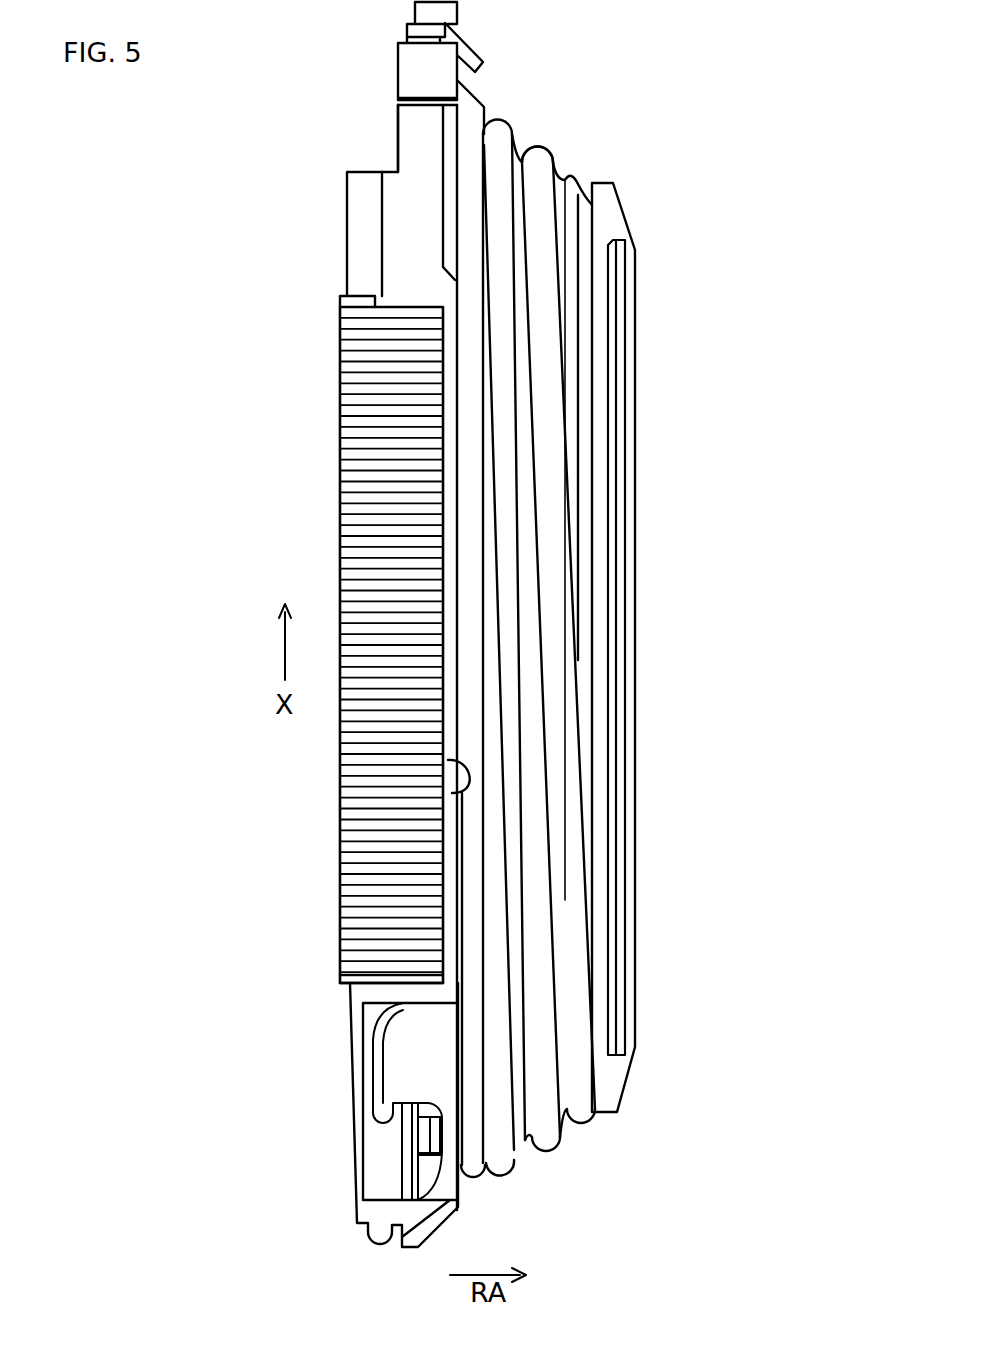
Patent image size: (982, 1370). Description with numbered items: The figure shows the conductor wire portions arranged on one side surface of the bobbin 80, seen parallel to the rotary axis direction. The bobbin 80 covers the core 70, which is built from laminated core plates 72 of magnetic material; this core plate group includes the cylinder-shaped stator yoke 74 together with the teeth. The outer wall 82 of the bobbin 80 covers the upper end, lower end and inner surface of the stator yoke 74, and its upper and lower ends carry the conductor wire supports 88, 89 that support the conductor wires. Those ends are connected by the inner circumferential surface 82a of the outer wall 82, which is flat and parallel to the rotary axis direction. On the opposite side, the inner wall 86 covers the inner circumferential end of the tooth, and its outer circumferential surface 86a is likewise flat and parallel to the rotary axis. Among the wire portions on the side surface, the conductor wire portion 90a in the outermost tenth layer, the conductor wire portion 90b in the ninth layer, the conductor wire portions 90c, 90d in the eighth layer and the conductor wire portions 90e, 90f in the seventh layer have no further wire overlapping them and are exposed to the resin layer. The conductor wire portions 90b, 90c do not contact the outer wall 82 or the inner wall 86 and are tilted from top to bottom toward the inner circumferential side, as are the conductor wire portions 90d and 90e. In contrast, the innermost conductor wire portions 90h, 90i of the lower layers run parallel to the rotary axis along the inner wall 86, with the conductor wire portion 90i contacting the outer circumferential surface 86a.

The core 70 is at (317, 300).
The core plates 72 is at (348, 364).
The stator yoke 74 is at (350, 456).
The bobbin 80 is at (340, 137).
The outer wall 82 is at (392, 245).
The inner circumferential surface 82a is at (458, 122).
The inner wall 86 is at (612, 210).
The outer circumferential surface 86a is at (590, 297).
The conductor wire support 88 is at (407, 73).
The conductor wire support 89 is at (383, 1213).
The conductor wire portion 90a is at (465, 427).
The conductor wire portion 90b is at (500, 1163).
The conductor wire portion 90c is at (540, 1137).
The conductor wire portion 90d is at (520, 1138).
The conductor wire portion 90e is at (537, 153).
The conductor wire portion 90f is at (567, 180).
The conductor wire portion 90h is at (575, 223).
The conductor wire portion 90i is at (597, 190).